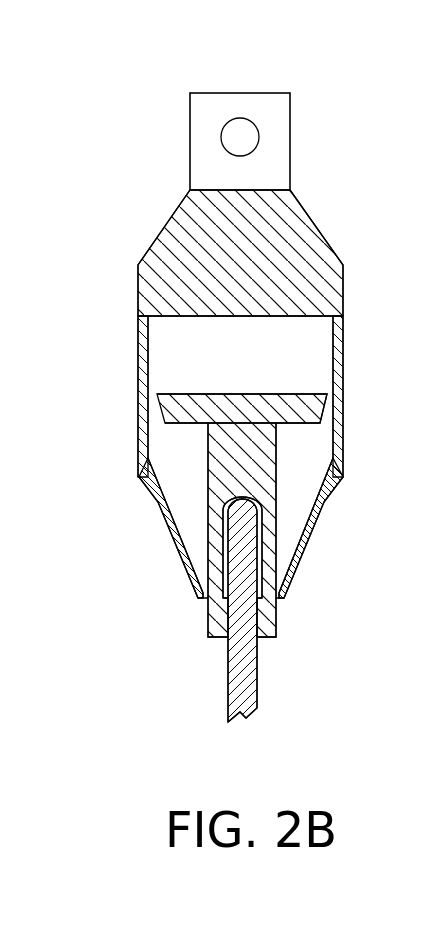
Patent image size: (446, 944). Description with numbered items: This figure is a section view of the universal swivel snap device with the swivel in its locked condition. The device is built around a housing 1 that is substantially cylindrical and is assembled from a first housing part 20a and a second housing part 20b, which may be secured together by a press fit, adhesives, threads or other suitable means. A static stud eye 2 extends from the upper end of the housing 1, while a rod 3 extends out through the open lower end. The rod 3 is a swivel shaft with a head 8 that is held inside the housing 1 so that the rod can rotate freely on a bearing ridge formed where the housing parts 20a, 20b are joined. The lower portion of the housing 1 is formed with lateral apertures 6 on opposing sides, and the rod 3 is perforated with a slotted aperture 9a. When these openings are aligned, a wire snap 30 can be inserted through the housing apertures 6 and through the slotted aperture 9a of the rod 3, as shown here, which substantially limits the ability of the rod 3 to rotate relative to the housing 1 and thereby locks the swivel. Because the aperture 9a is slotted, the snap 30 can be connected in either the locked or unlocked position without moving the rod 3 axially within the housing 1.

The housing 1 is at (120, 293).
The eye 2 is at (259, 126).
The first housing part 20a is at (343, 364).
The second housing part 20b is at (316, 520).
The head 8 is at (168, 406).
The rod 3 is at (227, 530).
The housing apertures 6 is at (258, 513).
The slotted aperture 9a is at (258, 587).
The wire snap 30 is at (227, 670).